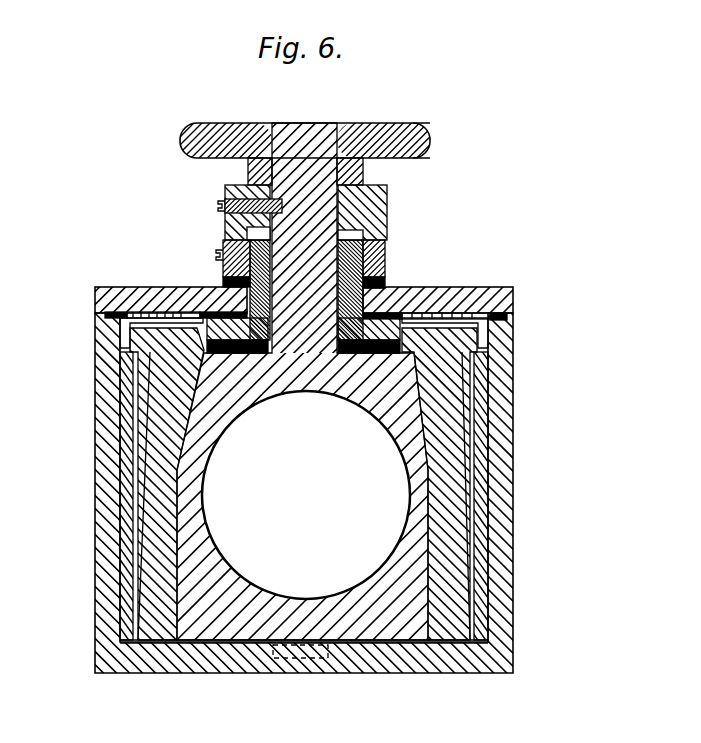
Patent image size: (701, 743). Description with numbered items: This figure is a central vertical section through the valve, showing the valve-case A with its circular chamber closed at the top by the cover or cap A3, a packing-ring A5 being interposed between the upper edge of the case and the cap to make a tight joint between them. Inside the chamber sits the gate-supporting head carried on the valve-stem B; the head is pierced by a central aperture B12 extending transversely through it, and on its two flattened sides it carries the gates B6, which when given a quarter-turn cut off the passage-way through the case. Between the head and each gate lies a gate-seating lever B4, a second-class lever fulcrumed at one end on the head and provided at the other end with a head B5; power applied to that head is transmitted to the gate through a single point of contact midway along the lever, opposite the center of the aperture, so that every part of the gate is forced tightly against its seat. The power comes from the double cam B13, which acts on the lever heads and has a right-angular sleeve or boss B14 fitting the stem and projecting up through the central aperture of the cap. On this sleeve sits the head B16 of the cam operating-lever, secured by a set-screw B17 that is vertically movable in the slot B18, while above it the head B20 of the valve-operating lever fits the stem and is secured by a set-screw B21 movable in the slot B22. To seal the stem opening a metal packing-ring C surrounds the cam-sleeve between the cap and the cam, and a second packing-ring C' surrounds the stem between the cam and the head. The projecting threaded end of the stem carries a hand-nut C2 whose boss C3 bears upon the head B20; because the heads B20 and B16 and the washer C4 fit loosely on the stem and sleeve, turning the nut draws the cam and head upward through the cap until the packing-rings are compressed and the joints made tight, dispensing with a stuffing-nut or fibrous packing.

The valve-case A is at (514, 492).
The cover or cap A3 is at (470, 297).
The packing-ring A5 is at (525, 296).
The valve-stem B is at (302, 130).
The gate-seating lever B4 is at (160, 471).
The head of gate-seating lever B5 is at (130, 333).
The gate B6 is at (535, 434).
The central aperture B12 is at (306, 495).
The double cam B13 is at (270, 332).
The sleeve or boss B14 is at (270, 301).
The head of operating-lever B16 is at (403, 258).
The set-screw B17 is at (223, 253).
The slot B18 is at (271, 268).
The head of lever B20 is at (388, 201).
The set-screw B21 is at (225, 203).
The slot B22 is at (350, 371).
The packing-ring C is at (350, 371).
The second packing-ring C' is at (303, 372).
The hand-nut C2 is at (428, 134).
The boss C3 is at (350, 371).
The washer C4 is at (386, 283).